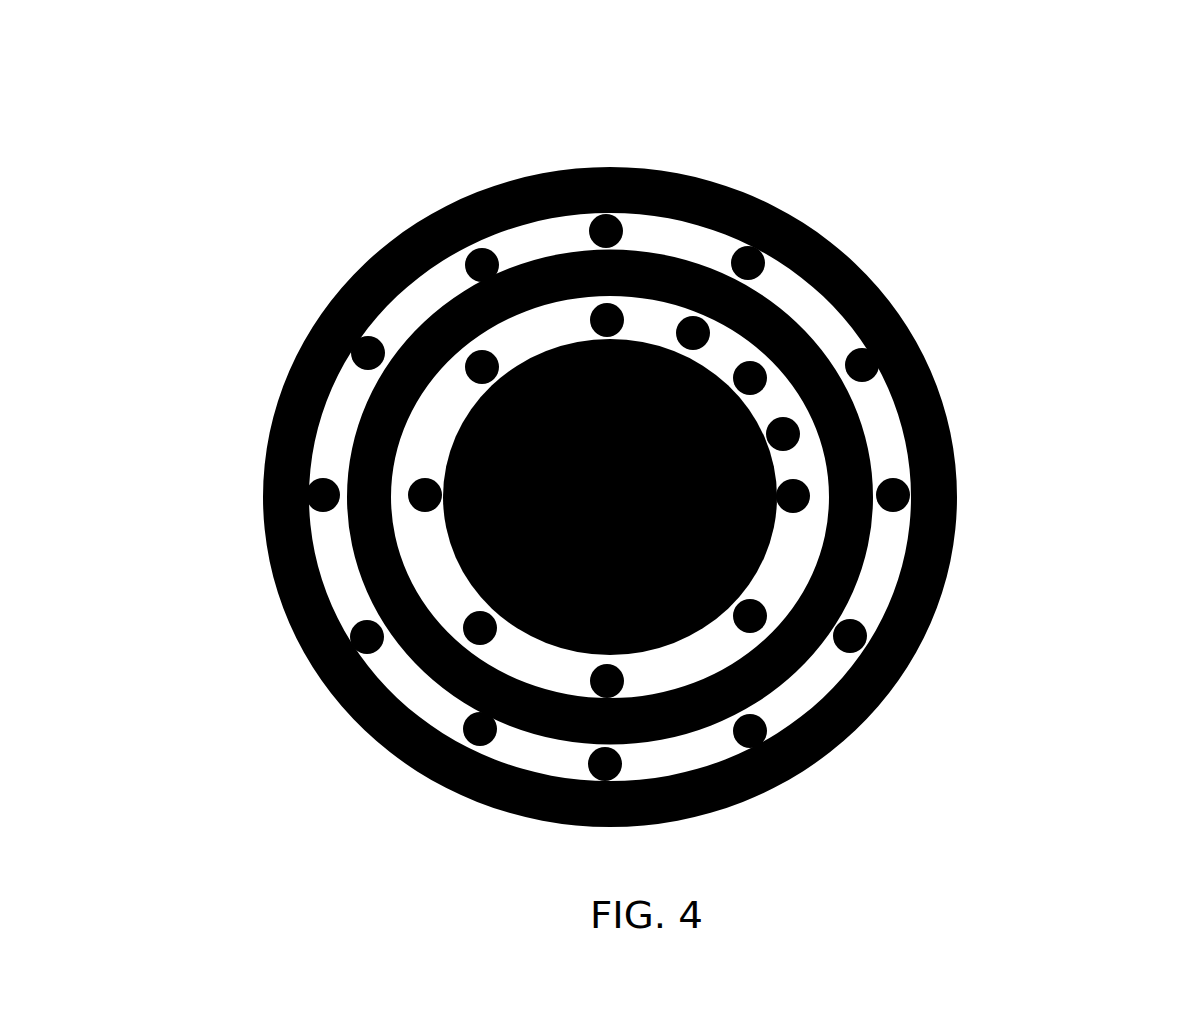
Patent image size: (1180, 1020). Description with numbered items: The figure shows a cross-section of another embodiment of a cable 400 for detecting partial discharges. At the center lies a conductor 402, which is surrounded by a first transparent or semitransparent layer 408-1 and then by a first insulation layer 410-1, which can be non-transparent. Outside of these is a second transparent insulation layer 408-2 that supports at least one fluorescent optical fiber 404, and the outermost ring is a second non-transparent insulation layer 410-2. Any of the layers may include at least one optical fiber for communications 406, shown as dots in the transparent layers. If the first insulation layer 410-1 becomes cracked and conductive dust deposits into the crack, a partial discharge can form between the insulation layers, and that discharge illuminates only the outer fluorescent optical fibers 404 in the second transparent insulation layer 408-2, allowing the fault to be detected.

The cable 400 is at (300, 750).
The conductor 402 is at (666, 528).
The fluorescent optical fiber 404 is at (742, 257).
The optical fiber for communications 406 is at (781, 437).
The first transparent or semitransparent layer 408-1 is at (710, 645).
The second transparent insulation layer 408-2 is at (802, 690).
The first insulation layer 410-1 is at (835, 585).
The second non-transparent insulation layer 410-2 is at (915, 615).